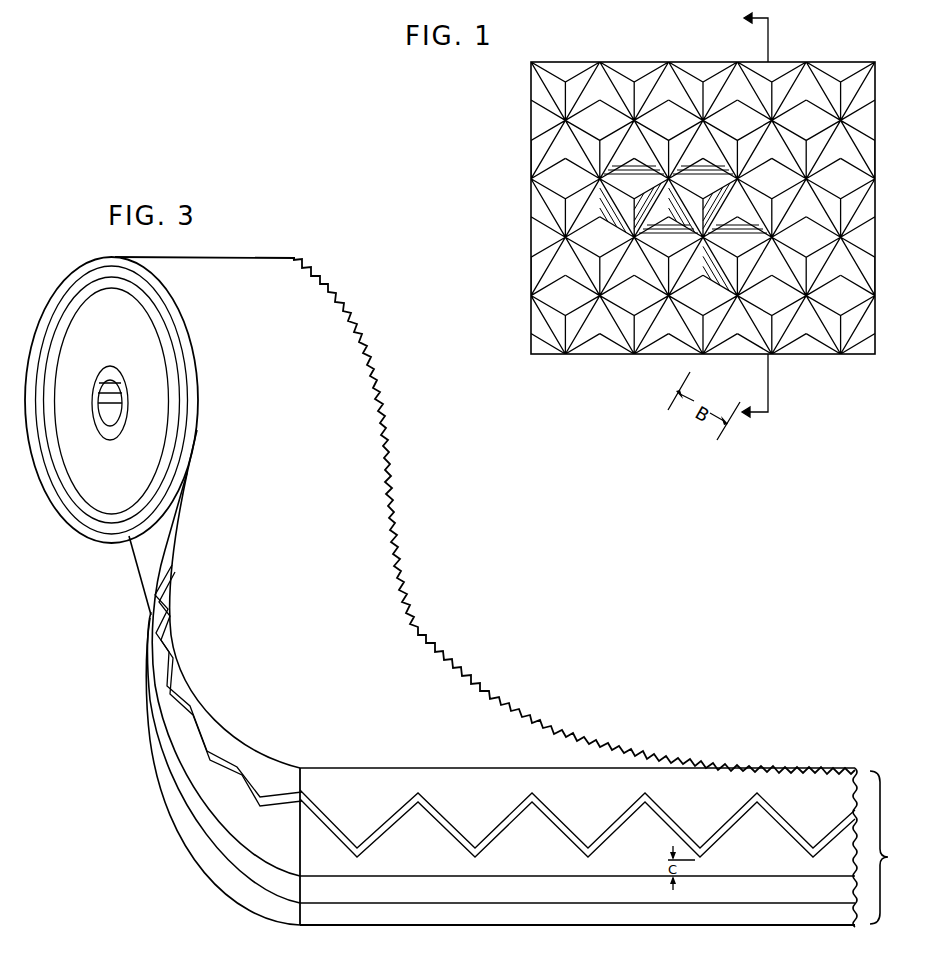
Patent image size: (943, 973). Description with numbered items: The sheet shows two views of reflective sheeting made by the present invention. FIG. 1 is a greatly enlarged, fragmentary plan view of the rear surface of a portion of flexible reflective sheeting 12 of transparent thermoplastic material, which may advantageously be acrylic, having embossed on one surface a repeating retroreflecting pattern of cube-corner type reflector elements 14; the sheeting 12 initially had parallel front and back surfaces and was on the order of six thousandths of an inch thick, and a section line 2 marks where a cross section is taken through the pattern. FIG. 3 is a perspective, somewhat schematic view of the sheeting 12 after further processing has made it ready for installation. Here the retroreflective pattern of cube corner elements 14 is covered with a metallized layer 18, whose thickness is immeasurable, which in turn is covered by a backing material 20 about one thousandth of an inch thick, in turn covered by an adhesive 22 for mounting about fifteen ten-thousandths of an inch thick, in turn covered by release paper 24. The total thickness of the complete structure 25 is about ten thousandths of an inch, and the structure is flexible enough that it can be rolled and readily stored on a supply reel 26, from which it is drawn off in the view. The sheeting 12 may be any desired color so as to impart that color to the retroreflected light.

In FIG. 1, the section line 2- 2 is at (767, 217).
In FIG. 1, the reflective sheeting 12 is at (497, 203).
In FIG. 3, the reflective sheeting 12 is at (362, 702).
In FIG. 1, the cube-corner type reflector elements 14 is at (598, 147).
In FIG. 3, the cube-corner type reflector elements 14 is at (360, 817).
In FIG. 3, the metallized layer 18 is at (841, 832).
In FIG. 3, the backing material 20 is at (424, 870).
In FIG. 3, the adhesive 22 is at (397, 900).
In FIG. 3, the release paper 24 is at (392, 925).
In FIG. 3, the complete structure 25 is at (609, 847).
In FIG. 3, the supply reel 26 is at (110, 424).